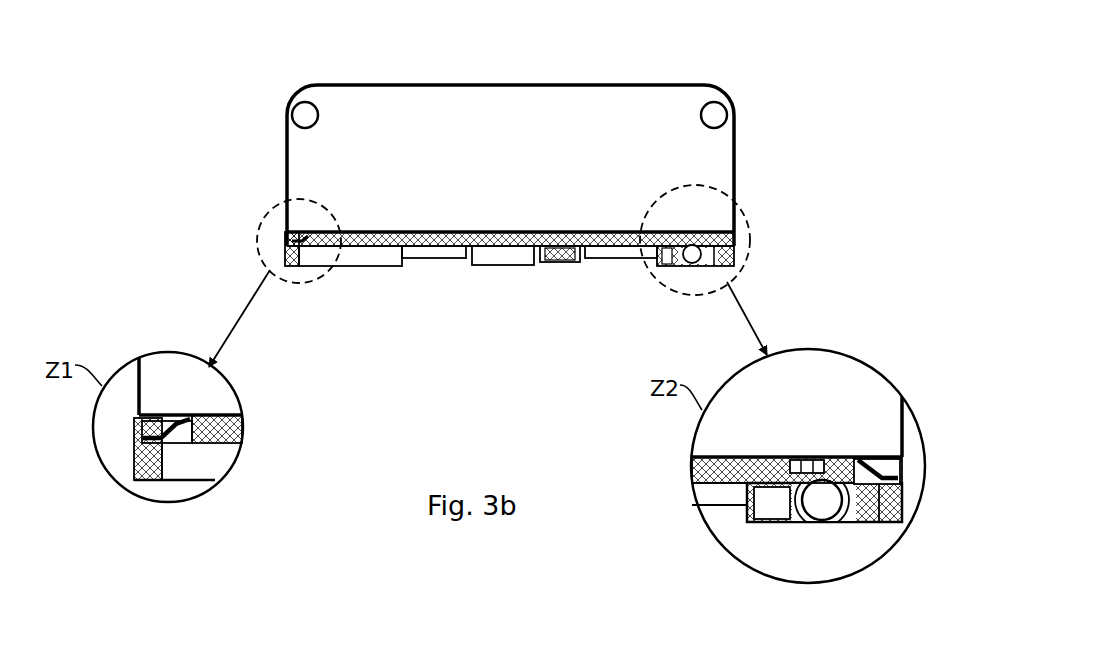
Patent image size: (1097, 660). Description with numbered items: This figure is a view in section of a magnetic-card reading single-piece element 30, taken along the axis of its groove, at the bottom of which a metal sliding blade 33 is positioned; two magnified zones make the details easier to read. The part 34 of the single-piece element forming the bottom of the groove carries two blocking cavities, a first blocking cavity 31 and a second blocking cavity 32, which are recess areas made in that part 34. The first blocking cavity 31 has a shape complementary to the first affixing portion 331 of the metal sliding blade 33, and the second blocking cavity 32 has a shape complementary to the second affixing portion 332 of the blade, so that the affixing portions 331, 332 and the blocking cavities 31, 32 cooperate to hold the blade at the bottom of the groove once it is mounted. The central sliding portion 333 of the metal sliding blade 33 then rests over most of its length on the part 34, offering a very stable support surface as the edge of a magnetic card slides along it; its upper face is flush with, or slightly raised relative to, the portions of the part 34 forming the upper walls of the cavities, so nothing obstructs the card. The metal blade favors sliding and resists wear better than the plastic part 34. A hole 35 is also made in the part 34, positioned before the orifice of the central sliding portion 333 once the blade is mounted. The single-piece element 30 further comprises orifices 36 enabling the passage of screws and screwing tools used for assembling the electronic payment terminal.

The magnetic-card reading single-piece element 30 is at (620, 72).
The orifices 36 is at (300, 113).
The part of the single-piece element forming the bottom of the groove 34 is at (410, 232).
The metal sliding blade 33 is at (482, 232).
The central sliding portion 333 is at (552, 232).
The hole 35 is at (808, 457).
The second affixing portion 332 is at (883, 457).
The second blocking cavity 32 is at (863, 477).
The first blocking cavity 31 is at (183, 447).
The first affixing portion 331 is at (148, 480).